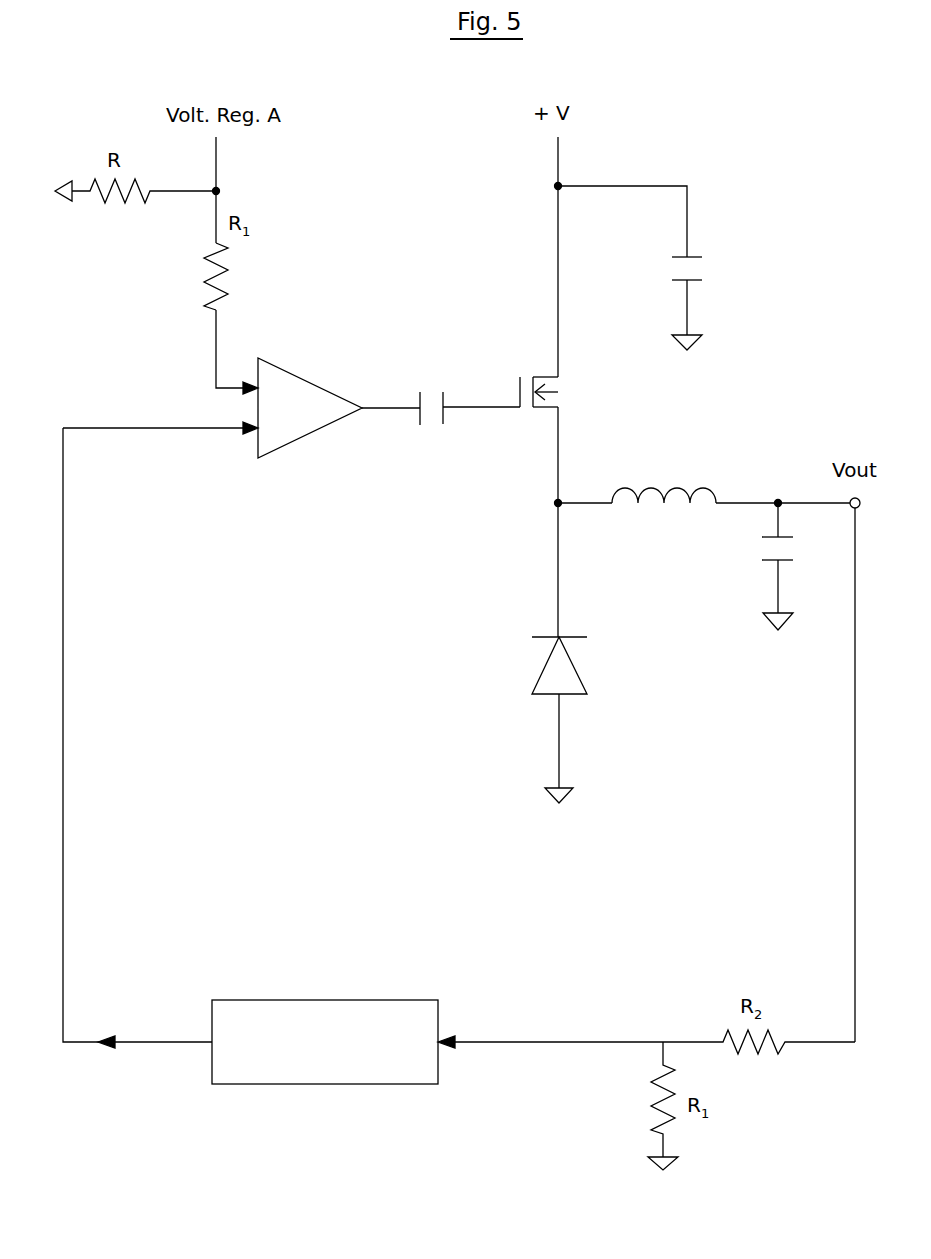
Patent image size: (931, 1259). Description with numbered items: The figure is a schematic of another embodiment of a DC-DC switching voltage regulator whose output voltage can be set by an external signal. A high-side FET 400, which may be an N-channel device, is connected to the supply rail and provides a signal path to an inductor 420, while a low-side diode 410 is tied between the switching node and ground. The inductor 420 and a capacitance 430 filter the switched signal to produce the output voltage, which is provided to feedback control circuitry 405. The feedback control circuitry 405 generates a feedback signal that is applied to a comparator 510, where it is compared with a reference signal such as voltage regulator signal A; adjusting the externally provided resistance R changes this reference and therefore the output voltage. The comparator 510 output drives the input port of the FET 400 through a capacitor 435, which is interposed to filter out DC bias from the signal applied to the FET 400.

The high-side FET 400 is at (547, 377).
The feedback control circuitry 405 is at (325, 1011).
The low-side diode 410 is at (545, 660).
The inductor 420 is at (700, 488).
The capacitance 430 is at (770, 525).
The capacitor 435 is at (408, 432).
The comparator 510 is at (310, 435).